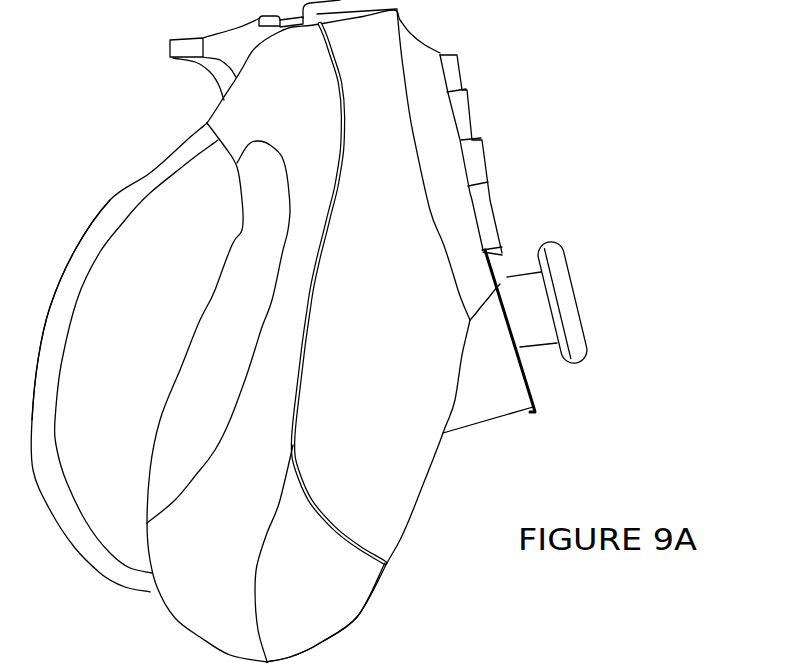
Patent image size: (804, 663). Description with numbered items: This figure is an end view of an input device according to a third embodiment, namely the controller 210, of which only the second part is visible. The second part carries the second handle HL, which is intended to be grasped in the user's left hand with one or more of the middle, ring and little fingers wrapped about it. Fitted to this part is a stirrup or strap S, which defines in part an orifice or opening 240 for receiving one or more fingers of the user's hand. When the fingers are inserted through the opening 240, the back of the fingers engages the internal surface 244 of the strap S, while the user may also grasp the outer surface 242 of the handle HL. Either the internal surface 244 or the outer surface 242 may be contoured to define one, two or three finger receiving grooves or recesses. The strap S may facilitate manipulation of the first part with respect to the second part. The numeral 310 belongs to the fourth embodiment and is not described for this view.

The controller 210 is at (84, 98).
The opening 240 is at (135, 396).
The outer surface of the handle 242 is at (192, 337).
The internal surface of the strap 244 is at (118, 231).
The strap S is at (52, 306).
The second handle HL is at (325, 594).
The controller base 310 is at (708, 655).